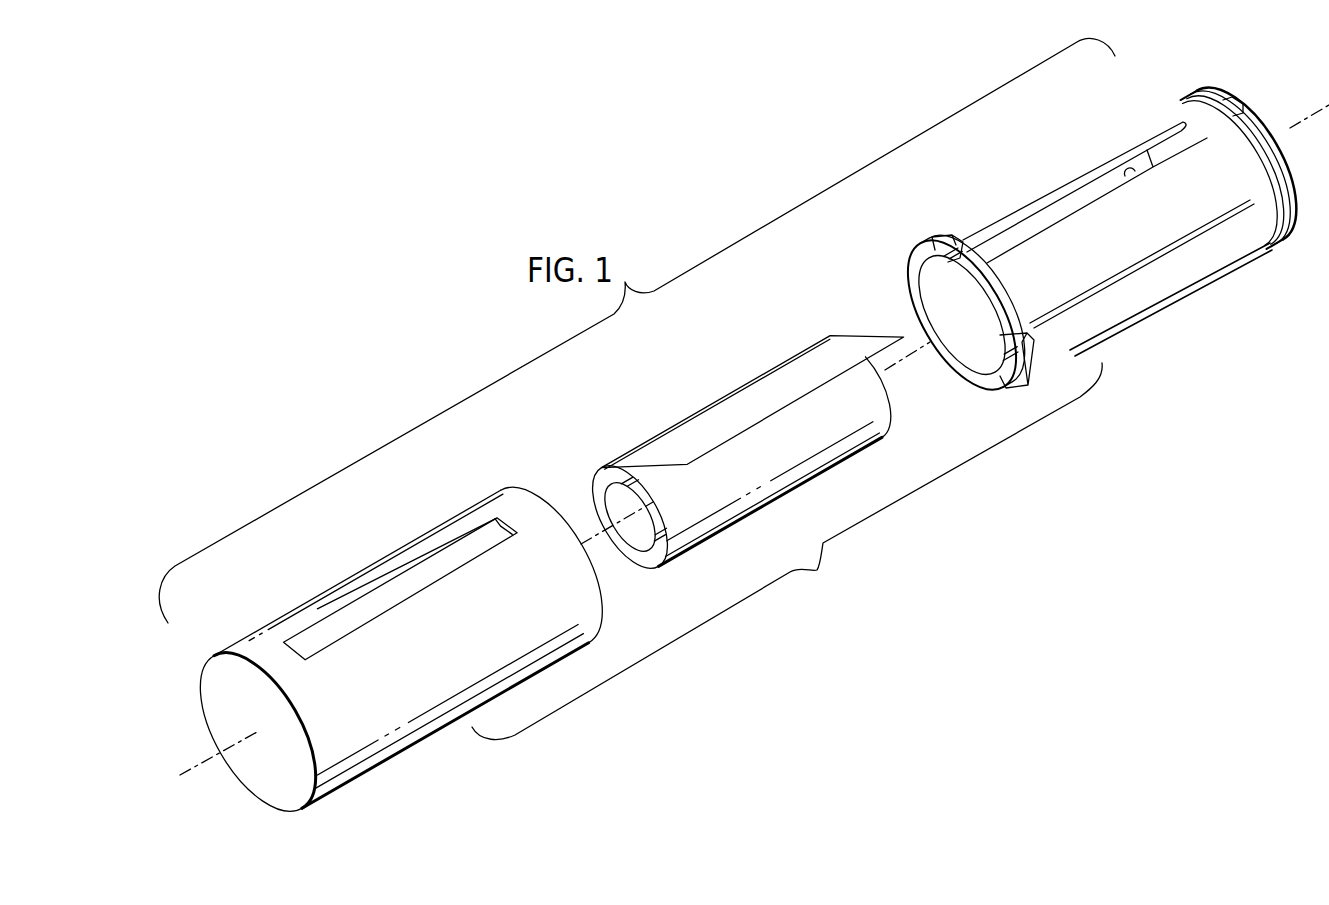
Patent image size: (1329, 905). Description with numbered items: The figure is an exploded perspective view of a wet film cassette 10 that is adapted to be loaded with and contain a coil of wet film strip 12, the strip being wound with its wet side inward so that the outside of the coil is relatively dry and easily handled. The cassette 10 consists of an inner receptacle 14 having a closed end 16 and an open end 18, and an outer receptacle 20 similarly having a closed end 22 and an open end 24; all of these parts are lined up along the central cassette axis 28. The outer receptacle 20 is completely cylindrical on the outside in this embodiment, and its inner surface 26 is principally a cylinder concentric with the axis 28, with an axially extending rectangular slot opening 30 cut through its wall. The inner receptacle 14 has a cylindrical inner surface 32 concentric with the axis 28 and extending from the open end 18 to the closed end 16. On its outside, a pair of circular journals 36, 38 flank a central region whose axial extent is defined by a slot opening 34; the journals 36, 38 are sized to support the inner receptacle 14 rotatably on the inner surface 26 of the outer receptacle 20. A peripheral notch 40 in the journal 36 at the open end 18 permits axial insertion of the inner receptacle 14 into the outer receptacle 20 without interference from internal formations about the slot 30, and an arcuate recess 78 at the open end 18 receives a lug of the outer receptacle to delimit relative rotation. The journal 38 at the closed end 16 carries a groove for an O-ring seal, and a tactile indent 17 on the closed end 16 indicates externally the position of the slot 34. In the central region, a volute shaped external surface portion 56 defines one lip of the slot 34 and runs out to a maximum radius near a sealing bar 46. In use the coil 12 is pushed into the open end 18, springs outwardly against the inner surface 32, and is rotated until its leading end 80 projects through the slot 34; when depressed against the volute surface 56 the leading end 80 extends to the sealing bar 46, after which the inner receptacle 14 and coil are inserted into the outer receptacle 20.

The wet film cassette 10 is at (637, 388).
The wet film strip 12 is at (741, 442).
The inner receptacle 14 is at (1117, 235).
The closed end 16 is at (1227, 151).
The indent 17 is at (1237, 108).
The open end 18 is at (966, 303).
The outer receptacle 20 is at (401, 649).
The closed end 22 is at (281, 769).
The open end 24 is at (470, 538).
The inner surface 26 is at (397, 594).
The central cassette axis 28 is at (1311, 124).
The slot opening 30 is at (505, 528).
The cylindrical inner surface 32 is at (965, 356).
The slot opening 34 is at (1137, 178).
The circular journal 36 is at (943, 238).
The circular journal 38 is at (1158, 112).
The peripheral notch 40 is at (1034, 274).
The sealing bar 46 is at (1153, 297).
The volute shaped external surface portion 56 is at (1134, 248).
The arcuate recess 78 is at (997, 387).
The leading end 80 is at (800, 386).